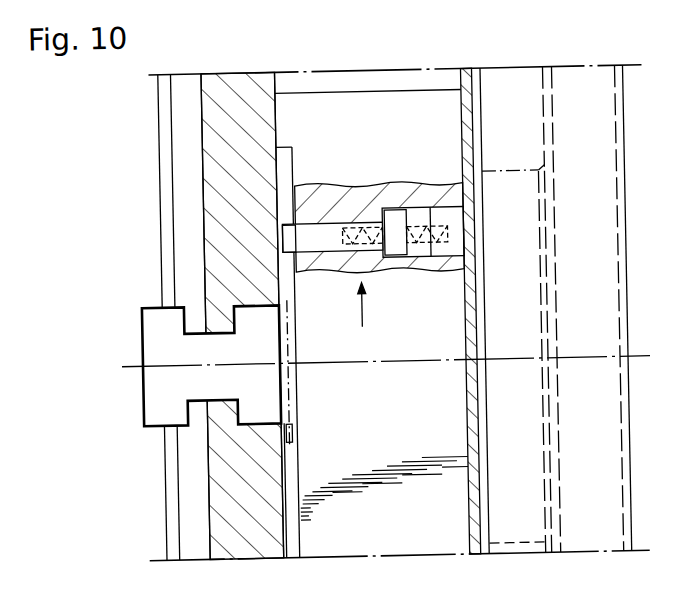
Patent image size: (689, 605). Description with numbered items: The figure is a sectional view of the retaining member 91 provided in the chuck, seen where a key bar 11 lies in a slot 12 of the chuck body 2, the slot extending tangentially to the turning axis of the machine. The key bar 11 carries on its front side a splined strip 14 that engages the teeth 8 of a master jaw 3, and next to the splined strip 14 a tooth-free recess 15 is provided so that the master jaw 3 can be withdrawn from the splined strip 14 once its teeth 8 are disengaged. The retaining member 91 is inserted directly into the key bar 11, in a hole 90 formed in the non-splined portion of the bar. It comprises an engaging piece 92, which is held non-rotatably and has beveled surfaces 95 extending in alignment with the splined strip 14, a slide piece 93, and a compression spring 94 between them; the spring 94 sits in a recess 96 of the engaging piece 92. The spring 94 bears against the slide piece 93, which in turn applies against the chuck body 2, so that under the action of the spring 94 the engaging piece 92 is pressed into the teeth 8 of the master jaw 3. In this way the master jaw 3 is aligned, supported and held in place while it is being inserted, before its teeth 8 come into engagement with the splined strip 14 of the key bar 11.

The chuck body 2 is at (467, 387).
The master jaw 3 is at (161, 325).
The teeth 8 is at (290, 398).
The key bar 11 is at (373, 108).
The slot 12 is at (467, 125).
The splined strip 14 is at (294, 433).
The tooth-free recess 15 is at (292, 167).
The hole 90 is at (429, 254).
The retaining member 91 is at (365, 316).
The engaging piece 92 is at (312, 243).
The slide piece 93 is at (460, 221).
The compression spring 94 is at (414, 238).
The beveled surfaces 95 is at (287, 235).
The recess 96 is at (369, 238).